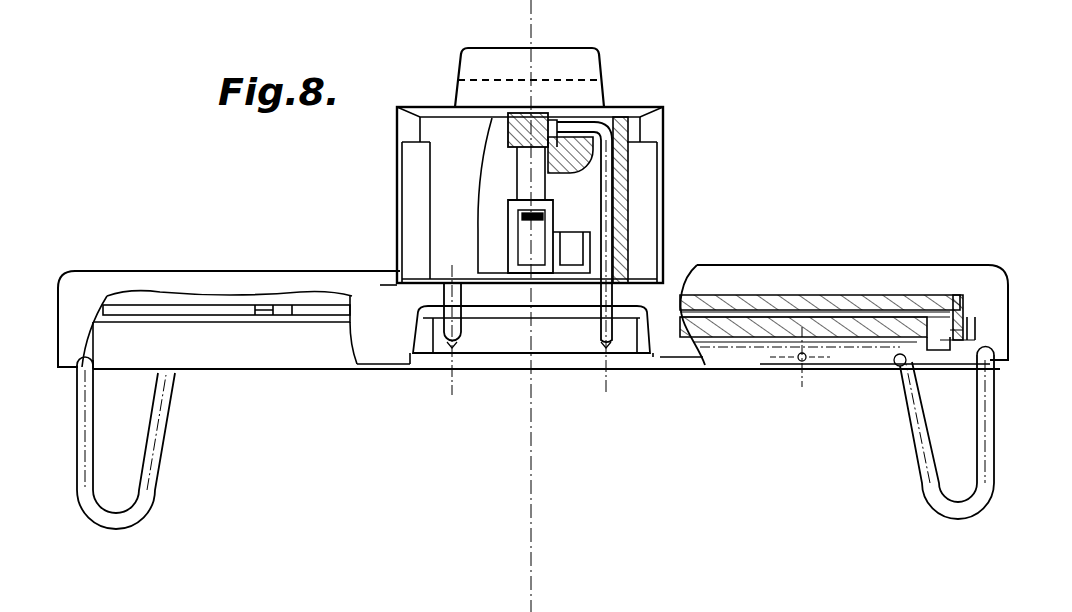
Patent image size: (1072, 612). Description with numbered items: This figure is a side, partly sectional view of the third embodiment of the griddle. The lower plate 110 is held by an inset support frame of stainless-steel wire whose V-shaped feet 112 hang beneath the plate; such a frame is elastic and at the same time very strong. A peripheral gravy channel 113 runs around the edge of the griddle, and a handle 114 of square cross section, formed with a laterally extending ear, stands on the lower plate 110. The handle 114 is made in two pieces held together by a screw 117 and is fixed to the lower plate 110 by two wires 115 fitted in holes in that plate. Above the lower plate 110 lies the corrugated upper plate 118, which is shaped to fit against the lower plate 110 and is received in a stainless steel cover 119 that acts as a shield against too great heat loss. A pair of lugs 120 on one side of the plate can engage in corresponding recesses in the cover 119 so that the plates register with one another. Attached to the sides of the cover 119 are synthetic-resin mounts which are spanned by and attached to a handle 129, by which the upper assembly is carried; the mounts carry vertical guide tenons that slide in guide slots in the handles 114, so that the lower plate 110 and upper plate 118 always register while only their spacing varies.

The handle 129 is at (563, 62).
The handle 114 is at (437, 131).
The screw 117 is at (540, 226).
The wire 115 is at (603, 334).
The lower plate 110 is at (783, 335).
The upper plate 118 is at (177, 308).
The lug 120 is at (275, 315).
The cover 119 is at (908, 265).
The peripheral gravy channel 113 is at (985, 341).
The V-shaped feet 112 is at (160, 417).